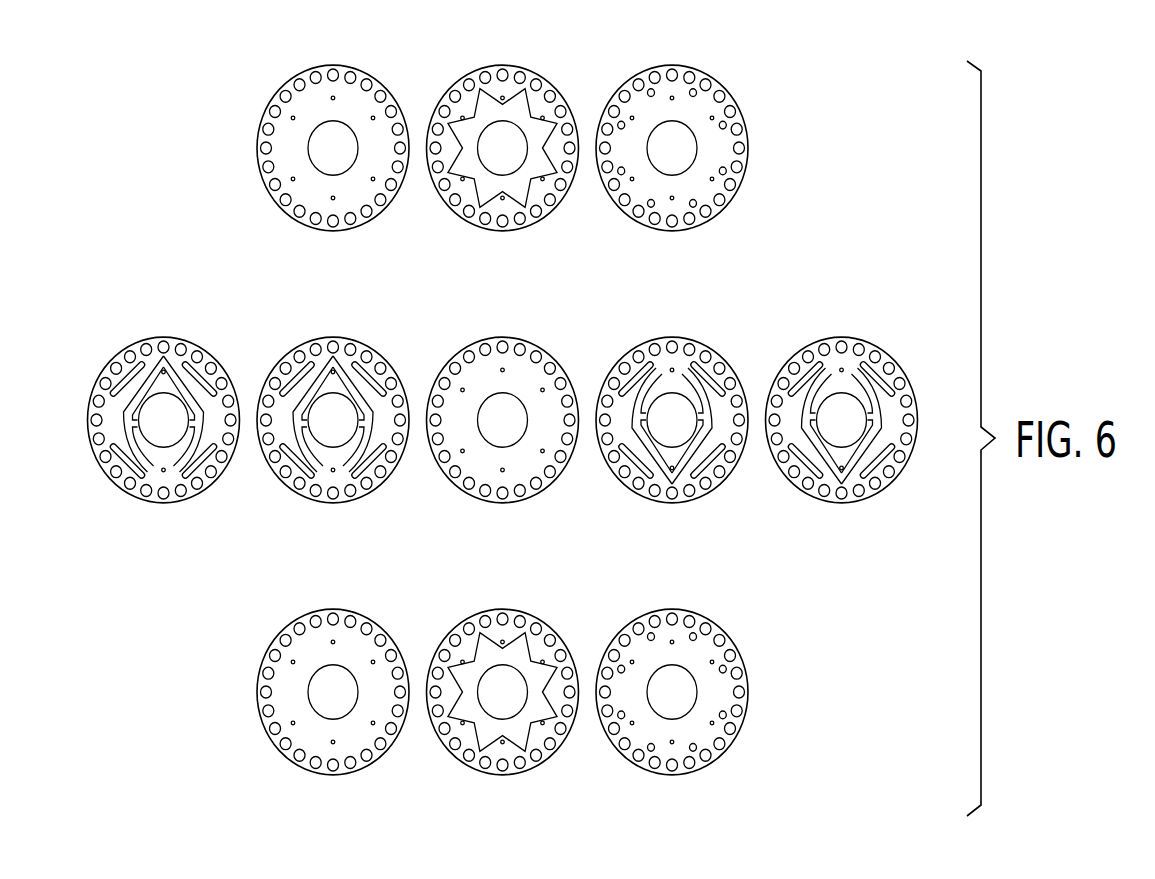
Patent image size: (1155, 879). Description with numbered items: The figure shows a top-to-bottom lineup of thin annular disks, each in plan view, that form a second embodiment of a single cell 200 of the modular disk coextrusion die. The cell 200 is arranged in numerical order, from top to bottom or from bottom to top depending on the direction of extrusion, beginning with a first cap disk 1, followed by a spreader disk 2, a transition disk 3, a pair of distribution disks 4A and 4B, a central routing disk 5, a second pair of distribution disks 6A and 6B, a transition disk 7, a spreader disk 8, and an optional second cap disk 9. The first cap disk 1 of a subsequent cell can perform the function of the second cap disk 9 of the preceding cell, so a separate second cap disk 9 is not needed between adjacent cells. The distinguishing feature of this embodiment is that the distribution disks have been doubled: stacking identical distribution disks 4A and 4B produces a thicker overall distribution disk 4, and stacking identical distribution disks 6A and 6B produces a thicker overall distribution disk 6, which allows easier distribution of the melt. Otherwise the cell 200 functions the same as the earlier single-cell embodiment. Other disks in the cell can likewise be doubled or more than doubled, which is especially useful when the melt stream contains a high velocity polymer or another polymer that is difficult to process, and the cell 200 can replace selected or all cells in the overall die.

The single cell 200 is at (503, 400).
The first cap disk 1 is at (333, 64).
The spreader disk 2 is at (502, 64).
The transition disk 3 is at (672, 64).
The distribution disk 4 is at (249, 433).
The distribution disk 4A is at (163, 336).
The distribution disk 4B is at (333, 336).
The central routing disk 5 is at (502, 336).
The distribution disk 6 is at (757, 433).
The distribution disk 6A is at (672, 336).
The distribution disk 6B is at (841, 336).
The transition disk 7 is at (333, 608).
The spreader disk 8 is at (502, 608).
The second cap disk 9 is at (672, 608).